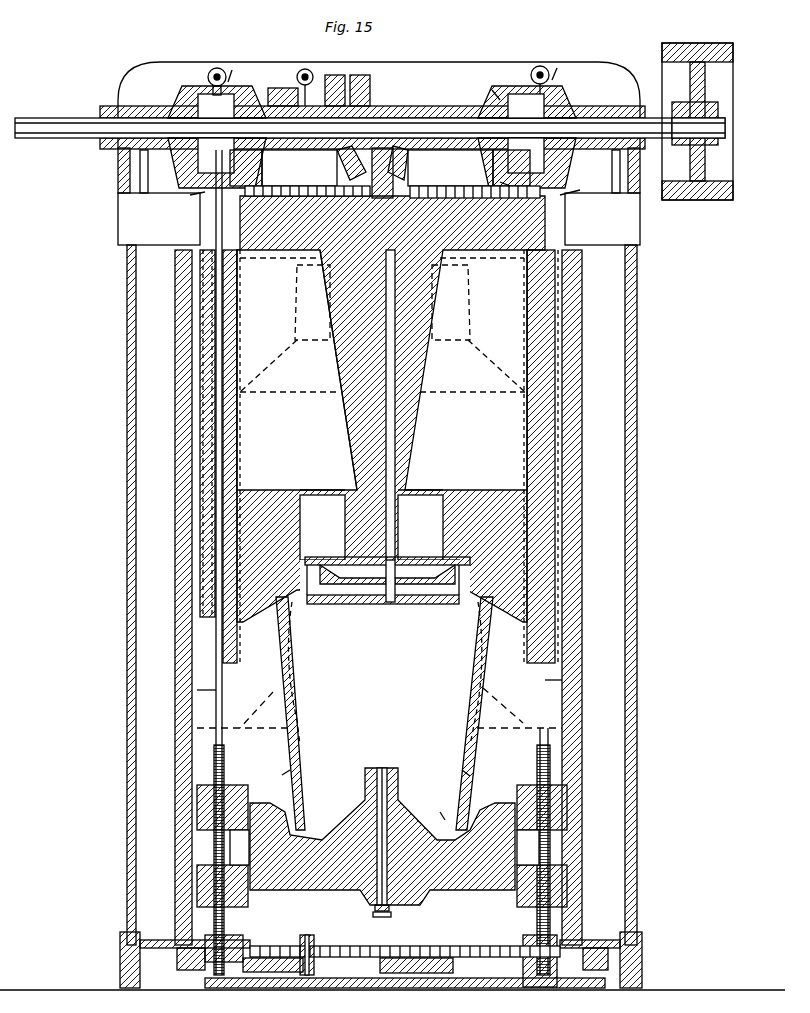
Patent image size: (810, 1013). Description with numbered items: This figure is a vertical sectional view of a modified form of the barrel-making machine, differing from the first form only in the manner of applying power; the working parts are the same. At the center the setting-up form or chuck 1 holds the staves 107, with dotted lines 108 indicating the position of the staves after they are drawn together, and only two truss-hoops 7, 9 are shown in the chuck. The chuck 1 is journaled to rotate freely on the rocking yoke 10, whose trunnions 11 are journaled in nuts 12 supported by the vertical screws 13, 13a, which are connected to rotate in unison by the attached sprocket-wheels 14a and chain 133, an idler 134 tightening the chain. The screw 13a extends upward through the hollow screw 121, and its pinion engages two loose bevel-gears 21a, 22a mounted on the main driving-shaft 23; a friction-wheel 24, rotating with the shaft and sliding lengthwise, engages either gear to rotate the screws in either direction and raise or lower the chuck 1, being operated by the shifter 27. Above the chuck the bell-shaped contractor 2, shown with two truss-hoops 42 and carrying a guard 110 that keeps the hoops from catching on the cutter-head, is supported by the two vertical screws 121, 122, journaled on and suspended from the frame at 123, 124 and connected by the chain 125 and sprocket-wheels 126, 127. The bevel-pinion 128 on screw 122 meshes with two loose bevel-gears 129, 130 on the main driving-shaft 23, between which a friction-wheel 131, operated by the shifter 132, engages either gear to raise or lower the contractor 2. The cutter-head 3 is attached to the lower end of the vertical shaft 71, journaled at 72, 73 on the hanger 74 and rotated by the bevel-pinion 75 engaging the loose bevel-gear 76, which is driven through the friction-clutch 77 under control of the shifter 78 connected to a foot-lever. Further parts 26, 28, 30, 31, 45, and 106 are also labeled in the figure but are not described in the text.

The main driving-shaft 23 is at (370, 116).
The loose bevel-gear 21a is at (182, 100).
The friction-wheel 24 is at (212, 86).
The roller 26 is at (216, 68).
The shifter 27 is at (239, 64).
The loose bevel-gear 22a is at (278, 85).
The shifter 78 is at (302, 87).
The loose bevel-gear 76 is at (358, 90).
The friction-clutch 77 is at (314, 166).
The bevel-pinion 75 is at (440, 166).
The chain 125 is at (392, 184).
The bevel-pinion 128 is at (493, 178).
The loose bevel-gear 129 is at (491, 80).
The shifter 132 is at (540, 66).
The friction-wheel 131 is at (561, 62).
The loose bevel-gear 130 is at (541, 126).
The pulley 106 is at (697, 110).
The sprocket-wheel 126 is at (182, 193).
The journal on the frame 123 is at (159, 219).
The journal on the frame 124 is at (602, 219).
The sprocket-wheel 127 is at (584, 187).
The journal 73 is at (391, 385).
The vertical screw 121 is at (233, 456).
The vertical shaft 71 is at (412, 362).
The hanger 74 is at (377, 370).
The vertical screw 122 is at (527, 456).
The guard 110 is at (445, 497).
The journal 72 is at (414, 426).
The bell-shaped contractor 2 is at (322, 527).
The truss-hoop 42 is at (450, 550).
The cutter-head 3 is at (385, 594).
The staves 107 is at (290, 676).
The dotted lines 108 is at (384, 673).
The stop 45 is at (379, 684).
The vertical screw 13a is at (223, 692).
The vertical screw 13 is at (545, 840).
The nut 12 is at (235, 786).
The trunnion 11 is at (382, 846).
The setting-up form or chuck 1 is at (280, 773).
The center pin 31 is at (382, 770).
The truss-hoop 7 is at (459, 767).
The truss-hoop 9 is at (445, 809).
The opening 28 is at (384, 847).
The nut 30 is at (381, 938).
The rocking yoke 10 is at (382, 836).
The idler 134 is at (320, 947).
The chain 133 is at (440, 946).
The sprocket-wheel 14a is at (405, 973).